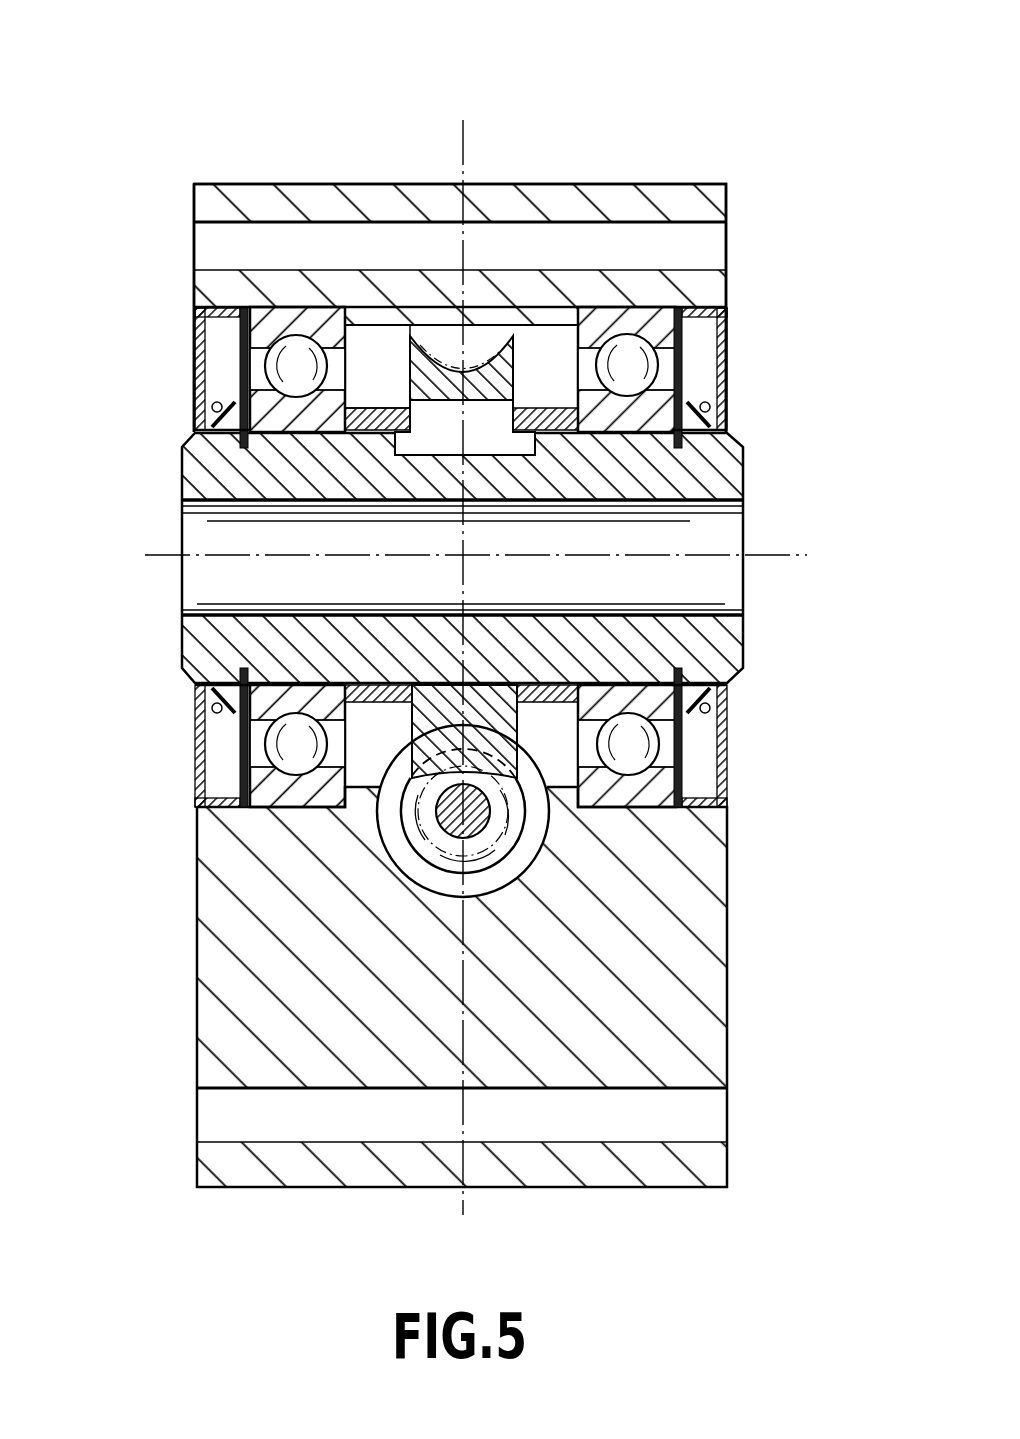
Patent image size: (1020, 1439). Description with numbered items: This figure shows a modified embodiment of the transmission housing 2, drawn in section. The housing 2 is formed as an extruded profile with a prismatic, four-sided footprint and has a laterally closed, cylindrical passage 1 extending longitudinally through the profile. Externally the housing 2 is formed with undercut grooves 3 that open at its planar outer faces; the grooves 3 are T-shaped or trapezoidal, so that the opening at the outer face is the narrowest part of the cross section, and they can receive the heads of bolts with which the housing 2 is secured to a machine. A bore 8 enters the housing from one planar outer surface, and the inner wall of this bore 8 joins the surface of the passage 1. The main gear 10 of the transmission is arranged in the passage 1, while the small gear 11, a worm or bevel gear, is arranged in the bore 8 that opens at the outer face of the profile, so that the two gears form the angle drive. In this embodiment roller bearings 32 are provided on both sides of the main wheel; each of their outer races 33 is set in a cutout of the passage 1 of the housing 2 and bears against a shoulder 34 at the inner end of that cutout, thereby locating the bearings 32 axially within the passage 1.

The passage 1 is at (372, 360).
The transmission housing 2 is at (732, 103).
The grooves 3 is at (726, 184).
The bore 8 is at (413, 863).
The main gear 10 is at (497, 340).
The small gear 11 is at (530, 837).
The roller bearings 32 is at (255, 362).
The outer races 33 is at (647, 320).
The shoulder 34 is at (565, 313).